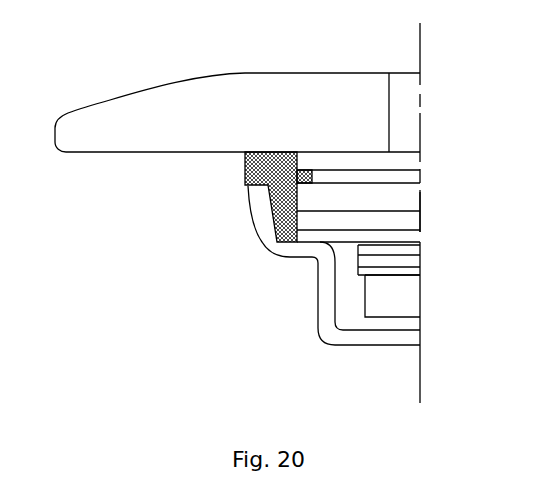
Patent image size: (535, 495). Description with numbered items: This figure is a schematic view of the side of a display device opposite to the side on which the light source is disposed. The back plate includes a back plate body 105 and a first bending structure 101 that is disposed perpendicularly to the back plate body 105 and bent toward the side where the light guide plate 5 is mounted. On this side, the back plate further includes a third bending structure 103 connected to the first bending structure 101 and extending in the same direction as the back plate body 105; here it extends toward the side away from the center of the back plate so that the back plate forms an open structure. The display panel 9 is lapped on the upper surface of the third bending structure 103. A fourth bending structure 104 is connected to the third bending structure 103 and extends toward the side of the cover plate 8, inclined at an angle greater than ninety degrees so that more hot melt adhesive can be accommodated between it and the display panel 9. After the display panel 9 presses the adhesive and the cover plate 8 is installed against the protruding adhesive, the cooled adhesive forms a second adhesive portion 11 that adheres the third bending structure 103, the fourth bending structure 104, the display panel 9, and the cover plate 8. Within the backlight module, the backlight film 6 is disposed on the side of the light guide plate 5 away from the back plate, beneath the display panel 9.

The cover plate 8 is at (282, 93).
The second adhesive portion 11 is at (270, 170).
The fourth bending structure 104 is at (268, 222).
The third bending structure 103 is at (290, 252).
The first bending structure 101 is at (325, 297).
The back plate body 105 is at (382, 338).
The display panel 9 is at (428, 185).
The backlight film 6 is at (428, 245).
The light guide plate 5 is at (402, 300).